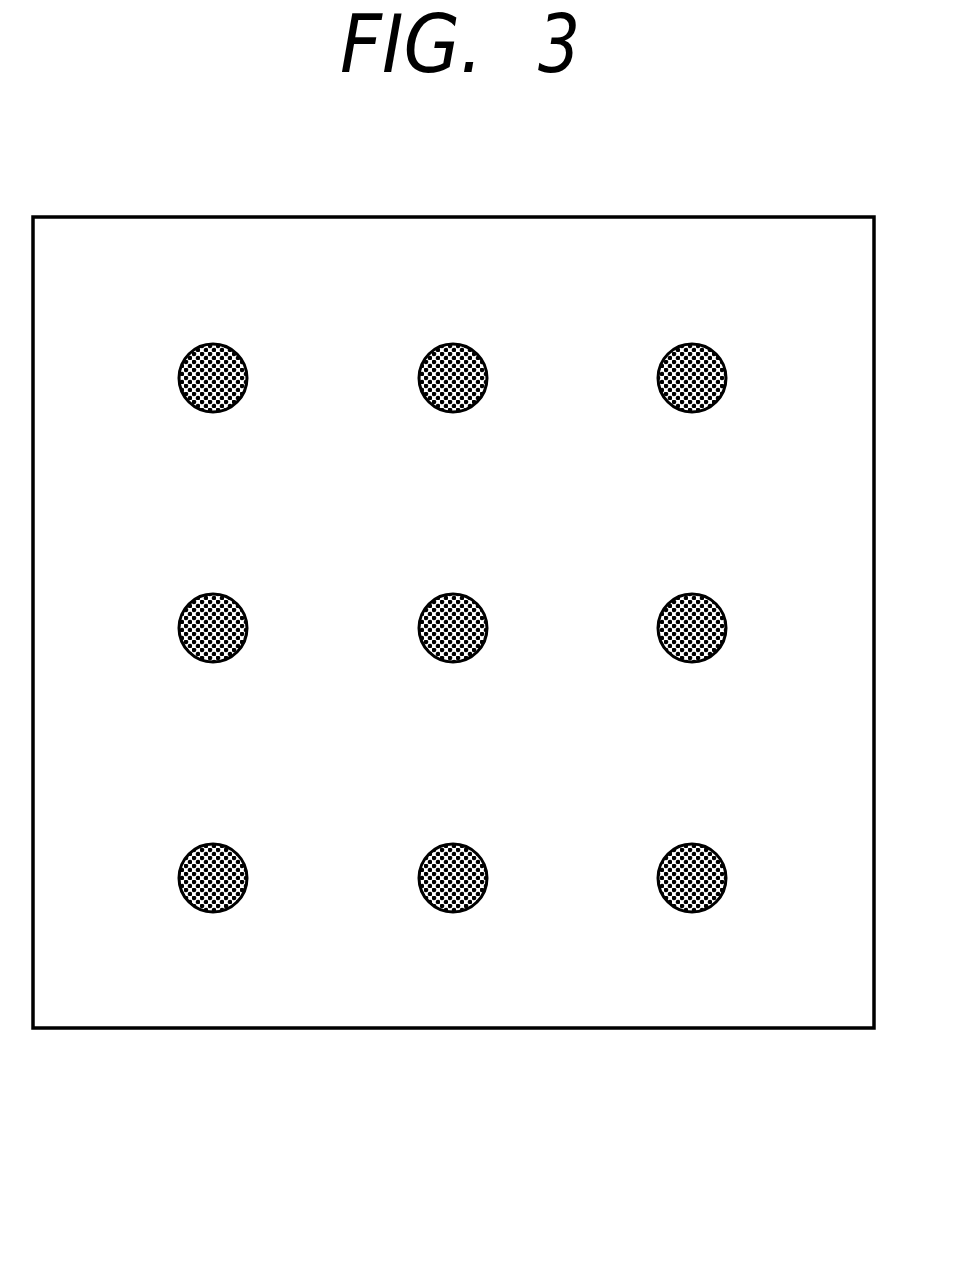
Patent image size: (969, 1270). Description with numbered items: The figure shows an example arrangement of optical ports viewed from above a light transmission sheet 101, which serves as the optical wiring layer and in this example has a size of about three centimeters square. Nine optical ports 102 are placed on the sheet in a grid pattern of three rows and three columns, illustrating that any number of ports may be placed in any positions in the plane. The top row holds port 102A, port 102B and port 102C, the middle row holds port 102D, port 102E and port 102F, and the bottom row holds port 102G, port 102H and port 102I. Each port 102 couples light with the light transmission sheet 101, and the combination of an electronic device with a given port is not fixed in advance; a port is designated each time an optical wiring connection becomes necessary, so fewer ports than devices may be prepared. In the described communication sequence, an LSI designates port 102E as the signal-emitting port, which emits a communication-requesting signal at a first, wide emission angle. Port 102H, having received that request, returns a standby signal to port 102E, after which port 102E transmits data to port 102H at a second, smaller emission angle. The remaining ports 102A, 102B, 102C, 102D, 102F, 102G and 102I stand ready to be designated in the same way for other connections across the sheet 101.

The light transmission sheet 101 is at (107, 993).
The optical port 102 is at (453, 971).
The port A 102A is at (215, 351).
The port B 102B is at (453, 351).
The port C 102C is at (691, 351).
The port D 102D is at (215, 604).
The port E 102E is at (453, 604).
The port F 102F is at (693, 604).
The port G 102G is at (215, 854).
The port H 102H is at (453, 854).
The port I 102I is at (694, 854).